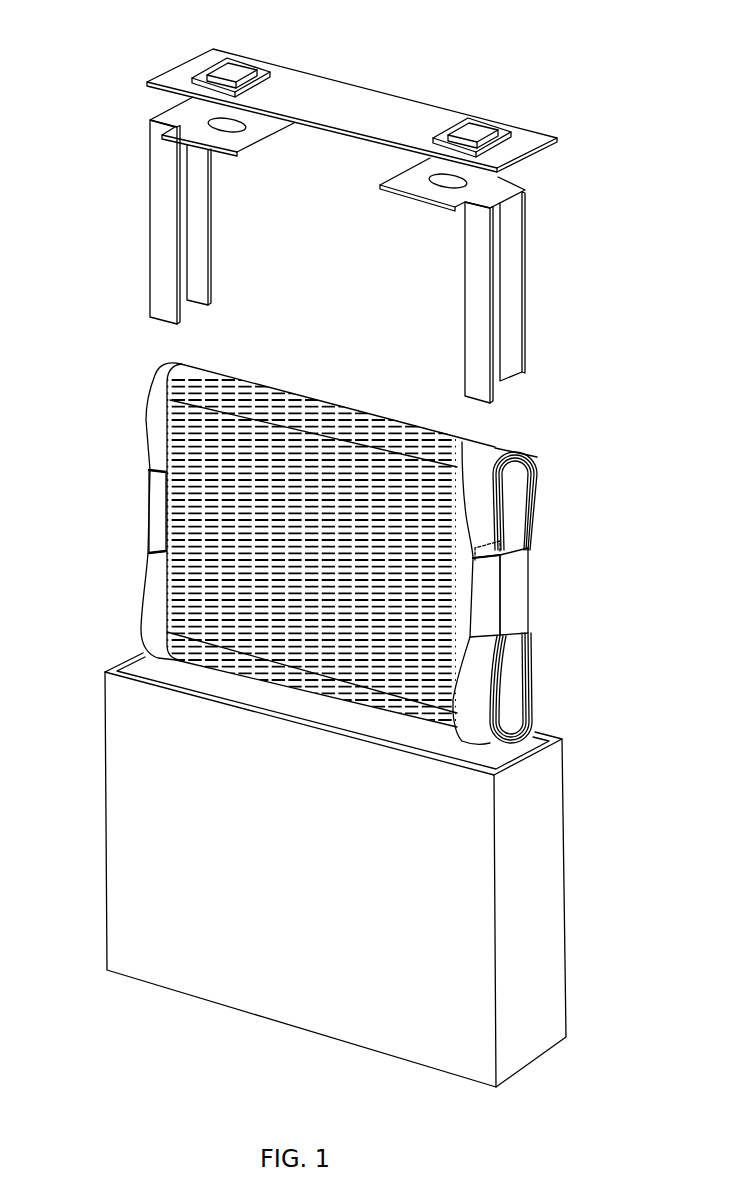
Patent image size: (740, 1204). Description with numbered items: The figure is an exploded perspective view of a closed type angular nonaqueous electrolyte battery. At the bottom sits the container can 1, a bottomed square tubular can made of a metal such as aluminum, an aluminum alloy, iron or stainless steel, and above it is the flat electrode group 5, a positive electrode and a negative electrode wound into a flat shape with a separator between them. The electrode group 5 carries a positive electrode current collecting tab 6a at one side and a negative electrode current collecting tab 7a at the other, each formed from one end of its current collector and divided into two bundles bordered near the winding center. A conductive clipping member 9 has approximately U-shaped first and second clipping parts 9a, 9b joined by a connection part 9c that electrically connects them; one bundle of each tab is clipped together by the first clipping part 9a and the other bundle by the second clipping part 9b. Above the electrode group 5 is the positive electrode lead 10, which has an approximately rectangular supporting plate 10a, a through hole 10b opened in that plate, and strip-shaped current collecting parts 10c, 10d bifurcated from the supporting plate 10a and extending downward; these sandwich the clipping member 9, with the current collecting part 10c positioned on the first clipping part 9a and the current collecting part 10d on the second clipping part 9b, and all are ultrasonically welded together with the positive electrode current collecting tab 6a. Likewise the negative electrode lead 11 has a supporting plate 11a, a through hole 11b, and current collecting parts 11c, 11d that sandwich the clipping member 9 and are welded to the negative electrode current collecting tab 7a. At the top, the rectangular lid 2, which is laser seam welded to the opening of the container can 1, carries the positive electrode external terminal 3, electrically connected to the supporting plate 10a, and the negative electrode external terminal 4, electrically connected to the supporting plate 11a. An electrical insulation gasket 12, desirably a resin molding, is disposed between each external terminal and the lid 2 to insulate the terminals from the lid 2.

The container can 1 is at (545, 898).
The lid 2 is at (361, 88).
The positive electrode external terminal 3 is at (237, 68).
The negative electrode external terminal 4 is at (472, 128).
The electrode group 5 is at (345, 400).
The positive electrode current collecting tab 6a is at (158, 418).
The negative electrode current collecting tab 7a is at (482, 497).
The conductive clipping member 9 is at (356, 553).
The first clipping part 9a is at (485, 618).
The second clipping part 9b is at (529, 584).
The connection part 9c is at (538, 550).
The positive electrode lead 10 is at (191, 210).
The supporting plate 10a is at (263, 125).
The through hole 10b is at (235, 127).
The current collecting part 10c is at (163, 272).
The current collecting part 10d is at (203, 264).
The negative electrode lead 11 is at (502, 280).
The supporting plate 11a is at (477, 189).
The through hole 11b is at (438, 183).
The current collecting part 11c is at (470, 316).
The current collecting part 11d is at (512, 312).
The electrical insulation gasket 12 is at (263, 72).